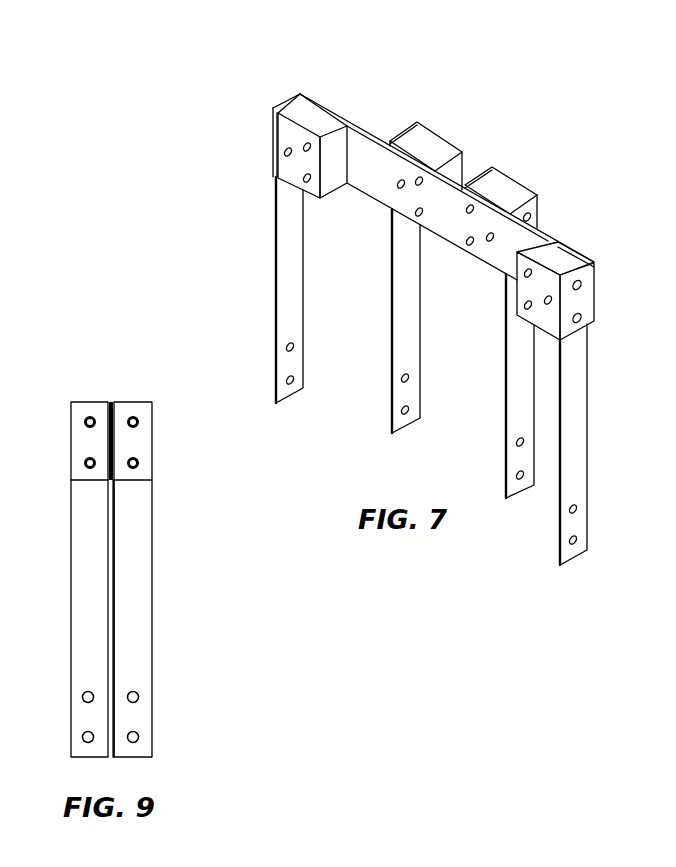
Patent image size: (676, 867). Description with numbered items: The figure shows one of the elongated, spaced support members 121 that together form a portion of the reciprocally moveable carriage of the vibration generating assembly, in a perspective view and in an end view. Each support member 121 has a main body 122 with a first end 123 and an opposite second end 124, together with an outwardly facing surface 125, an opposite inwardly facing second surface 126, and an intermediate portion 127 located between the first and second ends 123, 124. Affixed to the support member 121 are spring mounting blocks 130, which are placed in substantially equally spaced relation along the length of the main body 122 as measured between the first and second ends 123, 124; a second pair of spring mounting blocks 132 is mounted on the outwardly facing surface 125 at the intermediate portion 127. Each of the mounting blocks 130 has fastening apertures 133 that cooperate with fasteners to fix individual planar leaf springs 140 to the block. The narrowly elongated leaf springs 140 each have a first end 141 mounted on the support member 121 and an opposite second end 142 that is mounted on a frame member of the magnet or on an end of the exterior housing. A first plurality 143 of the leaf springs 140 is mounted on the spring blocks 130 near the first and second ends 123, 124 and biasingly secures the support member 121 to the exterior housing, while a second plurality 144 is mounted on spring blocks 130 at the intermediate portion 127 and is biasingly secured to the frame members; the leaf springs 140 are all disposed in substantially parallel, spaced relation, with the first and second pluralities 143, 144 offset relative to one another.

In FIG. 7, the support member 121 is at (447, 194).
In FIG. 9, the support member 121 is at (119, 548).
In FIG. 7, the main body 122 is at (375, 183).
In FIG. 7, the first end 123 is at (306, 97).
In FIG. 7, the second end 124 is at (592, 258).
In FIG. 7, the outwardly facing surface 125 is at (367, 127).
In FIG. 7, the second surface 126 is at (450, 235).
In FIG. 7, the intermediate portion 127 is at (437, 190).
In FIG. 7, the spring mounting blocks 130 is at (428, 298).
In FIG. 7, the second pair of spring mounting blocks 132 is at (481, 142).
In FIG. 7, the fastening apertures 133 is at (533, 211).
In FIG. 7, the planar leaf springs 140 is at (423, 329).
In FIG. 7, the first end 141 is at (272, 178).
In FIG. 9, the first end 141 is at (111, 401).
In FIG. 7, the second end 142 is at (288, 388).
In FIG. 9, the second end 142 is at (143, 743).
In FIG. 7, the first plurality of leaf springs 143 is at (423, 329).
In FIG. 9, the first plurality of leaf springs 143 is at (78, 592).
In FIG. 7, the second plurality of leaf springs 144 is at (503, 416).
In FIG. 9, the second plurality of leaf springs 144 is at (147, 592).